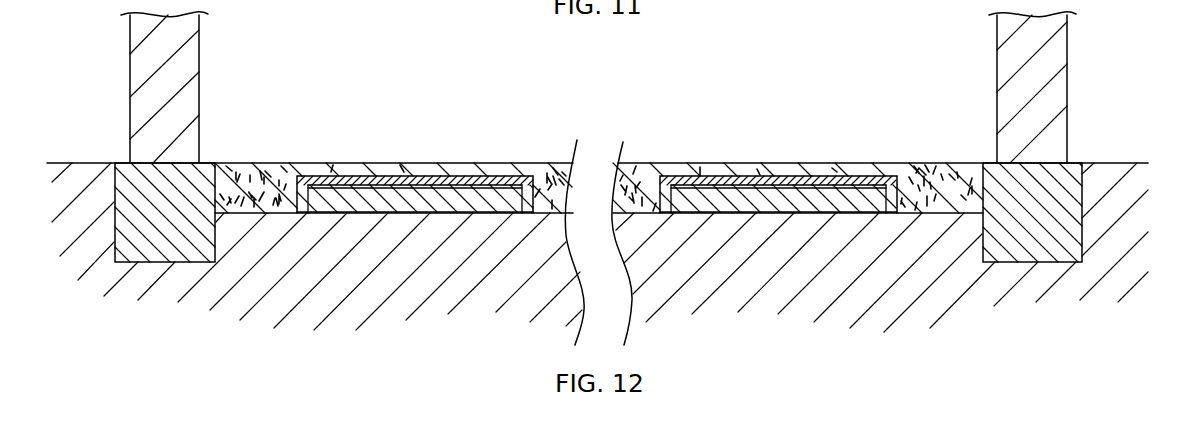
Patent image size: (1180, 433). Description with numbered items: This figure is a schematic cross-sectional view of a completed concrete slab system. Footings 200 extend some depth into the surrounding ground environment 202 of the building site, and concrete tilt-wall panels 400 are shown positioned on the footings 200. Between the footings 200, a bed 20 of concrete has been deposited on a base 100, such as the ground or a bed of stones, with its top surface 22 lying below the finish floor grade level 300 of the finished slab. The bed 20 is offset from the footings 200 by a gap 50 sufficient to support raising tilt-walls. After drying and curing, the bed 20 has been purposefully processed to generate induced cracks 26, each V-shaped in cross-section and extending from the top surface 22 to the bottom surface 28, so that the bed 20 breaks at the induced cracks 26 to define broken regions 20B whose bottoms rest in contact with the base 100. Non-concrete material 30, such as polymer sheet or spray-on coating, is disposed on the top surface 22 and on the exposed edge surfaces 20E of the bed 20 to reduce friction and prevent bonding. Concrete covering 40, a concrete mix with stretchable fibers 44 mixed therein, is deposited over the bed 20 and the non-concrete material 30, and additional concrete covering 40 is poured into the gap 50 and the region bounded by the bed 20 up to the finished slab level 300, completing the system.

The bed 20 is at (396, 183).
The edge surfaces 20E is at (303, 198).
The broken regions 20B is at (318, 214).
The top surface 22 is at (452, 186).
The induced cracks 26 is at (345, 205).
The bottom surface 28 is at (403, 214).
The non-concrete material 30 is at (428, 182).
The concrete covering 40 is at (288, 207).
The stretchable fibers 44 is at (270, 173).
The gap 50 is at (250, 194).
The base 100 is at (557, 198).
The footing 200 is at (114, 194).
The ground environment 202 is at (970, 303).
The finish floor grade level 300 is at (232, 163).
The concrete tilt-wall panels 400 is at (132, 70).